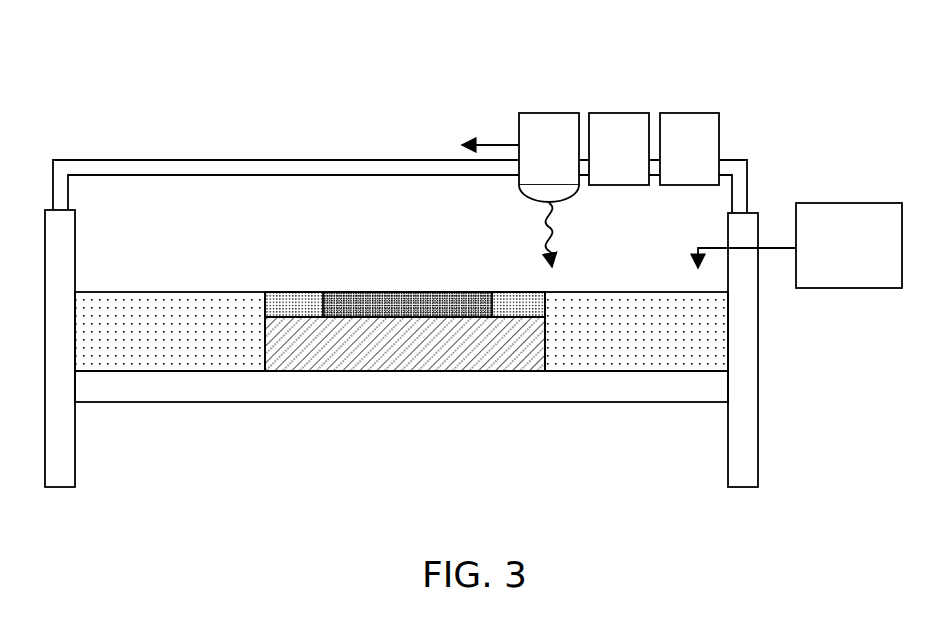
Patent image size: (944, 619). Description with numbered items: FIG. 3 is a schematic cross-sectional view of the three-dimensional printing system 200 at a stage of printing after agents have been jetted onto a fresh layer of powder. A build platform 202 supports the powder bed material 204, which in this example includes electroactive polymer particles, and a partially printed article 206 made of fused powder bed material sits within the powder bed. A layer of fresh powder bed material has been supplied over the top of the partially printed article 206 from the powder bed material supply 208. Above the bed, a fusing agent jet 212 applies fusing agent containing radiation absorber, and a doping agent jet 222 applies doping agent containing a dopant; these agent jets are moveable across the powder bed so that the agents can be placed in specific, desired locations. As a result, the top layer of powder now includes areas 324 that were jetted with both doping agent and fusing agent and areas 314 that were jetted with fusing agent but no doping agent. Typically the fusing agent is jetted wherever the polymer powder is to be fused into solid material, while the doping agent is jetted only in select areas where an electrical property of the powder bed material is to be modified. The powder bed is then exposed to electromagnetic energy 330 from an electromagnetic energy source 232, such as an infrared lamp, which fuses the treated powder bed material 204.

The 3D printing system 200 is at (128, 54).
The build platform 202 is at (566, 382).
The powder bed material 204 is at (203, 350).
The partially printed article 206 is at (330, 365).
The powder bed material supply 208 is at (870, 259).
The fusing agent jet 212 is at (668, 161).
The doping agent jet 222 is at (598, 161).
The electromagnetic energy source 232 is at (528, 161).
The areas jetted with fusing agent and no doping agent 314 is at (291, 300).
The areas jetted with doping agent and fusing agent 324 is at (393, 300).
The electromagnetic energy 330 is at (528, 226).